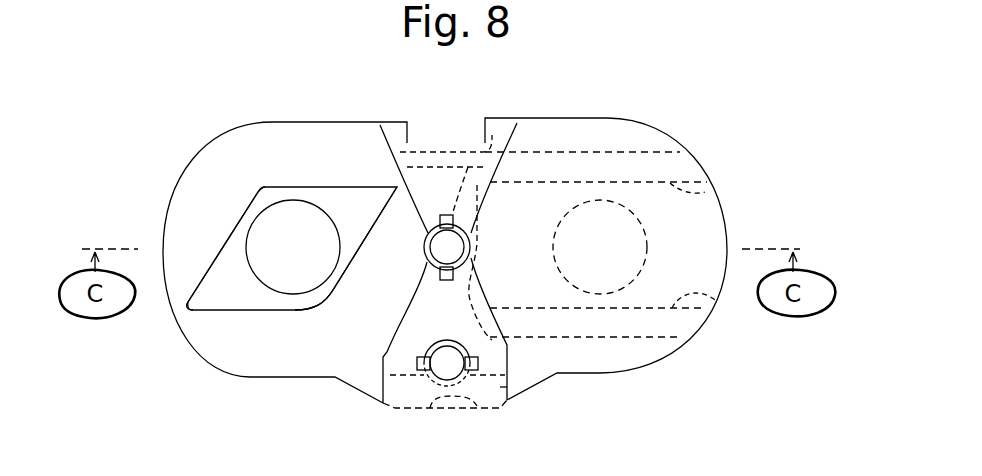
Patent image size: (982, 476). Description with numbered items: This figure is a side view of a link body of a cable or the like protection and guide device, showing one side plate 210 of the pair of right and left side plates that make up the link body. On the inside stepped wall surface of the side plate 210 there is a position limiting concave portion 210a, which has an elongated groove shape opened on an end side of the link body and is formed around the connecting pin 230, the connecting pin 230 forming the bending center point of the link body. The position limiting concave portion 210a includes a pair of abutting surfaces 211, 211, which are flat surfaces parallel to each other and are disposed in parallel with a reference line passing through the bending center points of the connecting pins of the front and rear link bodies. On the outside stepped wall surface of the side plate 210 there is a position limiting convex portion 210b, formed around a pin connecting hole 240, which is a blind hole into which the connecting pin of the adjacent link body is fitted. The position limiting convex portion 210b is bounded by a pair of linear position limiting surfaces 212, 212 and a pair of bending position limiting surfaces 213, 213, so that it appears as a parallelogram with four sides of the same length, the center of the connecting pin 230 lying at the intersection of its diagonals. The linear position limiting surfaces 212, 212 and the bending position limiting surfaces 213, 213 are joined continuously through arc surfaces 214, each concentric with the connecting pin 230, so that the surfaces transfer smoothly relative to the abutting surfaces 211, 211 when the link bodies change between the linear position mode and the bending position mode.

The side plate 210 is at (553, 94).
The position limiting concave portion 210a is at (688, 228).
The position limiting convex portion 210b is at (212, 304).
The abutting surface 211 is at (705, 192).
The linear position limiting surface 212 is at (310, 187).
The bending position limiting surface 213 is at (214, 257).
The arc surface 214 is at (258, 192).
The connecting pin 230 is at (612, 200).
The pin connecting hole 240 is at (275, 282).